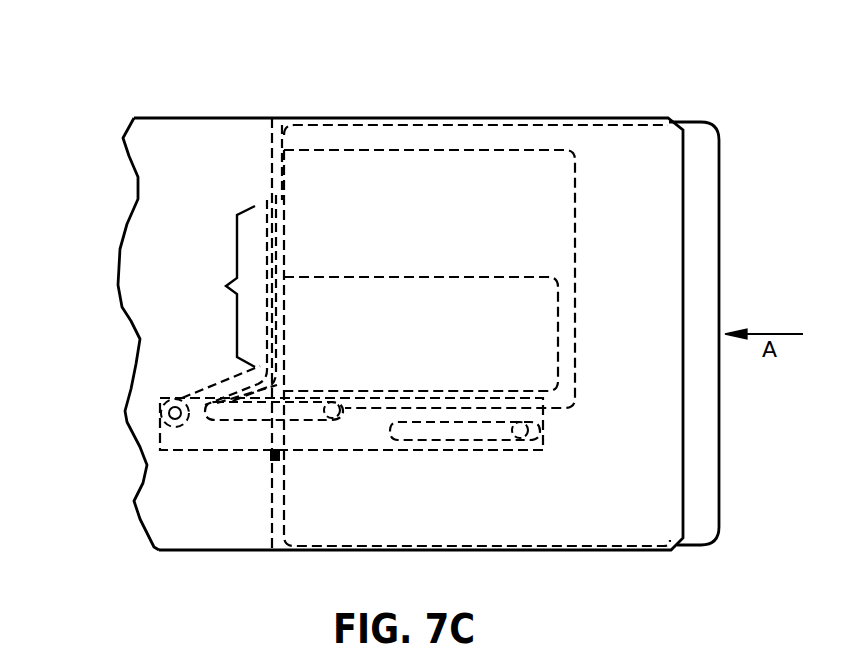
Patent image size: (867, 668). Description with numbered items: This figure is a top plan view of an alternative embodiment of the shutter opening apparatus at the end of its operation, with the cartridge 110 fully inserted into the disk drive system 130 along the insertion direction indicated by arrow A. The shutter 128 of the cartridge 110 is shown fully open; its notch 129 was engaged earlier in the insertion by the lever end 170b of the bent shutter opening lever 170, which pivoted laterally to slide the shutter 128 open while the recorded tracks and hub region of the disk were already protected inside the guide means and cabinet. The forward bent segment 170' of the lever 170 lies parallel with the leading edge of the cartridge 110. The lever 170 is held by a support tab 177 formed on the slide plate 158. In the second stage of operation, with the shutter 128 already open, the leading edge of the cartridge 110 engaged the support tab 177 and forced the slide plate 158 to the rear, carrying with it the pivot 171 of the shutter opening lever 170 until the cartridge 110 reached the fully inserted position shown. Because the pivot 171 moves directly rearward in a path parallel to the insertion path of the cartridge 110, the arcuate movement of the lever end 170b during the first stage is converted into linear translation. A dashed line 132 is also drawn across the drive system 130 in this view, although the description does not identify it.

The cartridge 110 is at (720, 201).
The shutter 128 is at (575, 207).
The notch 129 is at (283, 200).
The disk drive system 130 is at (457, 109).
The fold line 132 is at (258, 118).
The slide plate 158 is at (320, 453).
The shutter opening lever 170 is at (227, 283).
The lever end 170b is at (274, 198).
The forward bent segment 170' is at (212, 286).
The pivot 171 is at (170, 415).
The support tab 177 is at (272, 456).